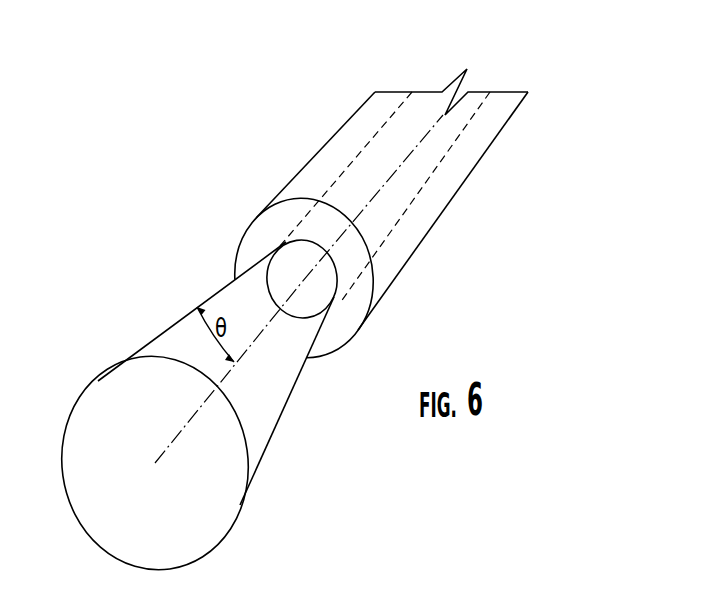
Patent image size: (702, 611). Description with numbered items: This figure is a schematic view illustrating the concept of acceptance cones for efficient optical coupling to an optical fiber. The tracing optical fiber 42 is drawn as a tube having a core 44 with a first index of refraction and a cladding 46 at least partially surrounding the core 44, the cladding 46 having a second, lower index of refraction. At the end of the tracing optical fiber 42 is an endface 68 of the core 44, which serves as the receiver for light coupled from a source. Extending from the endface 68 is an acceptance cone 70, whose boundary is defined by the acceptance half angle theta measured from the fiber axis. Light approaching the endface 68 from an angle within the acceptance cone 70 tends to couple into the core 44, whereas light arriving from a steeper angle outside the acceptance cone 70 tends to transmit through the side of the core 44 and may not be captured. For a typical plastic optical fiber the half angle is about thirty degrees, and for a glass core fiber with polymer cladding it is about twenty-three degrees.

The tracing optical fiber 42 is at (324, 143).
The core 44 is at (292, 267).
The cladding 46 is at (352, 298).
The endface 68 is at (325, 285).
The acceptance cone 70 is at (280, 415).